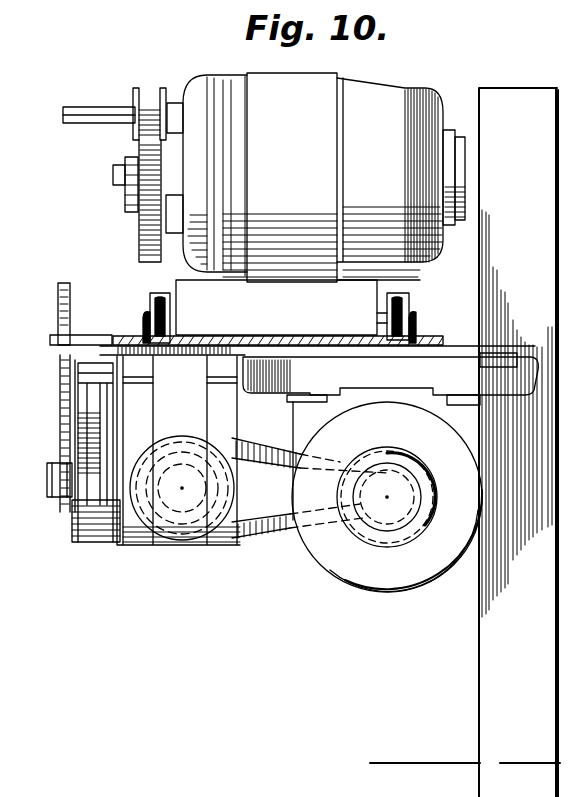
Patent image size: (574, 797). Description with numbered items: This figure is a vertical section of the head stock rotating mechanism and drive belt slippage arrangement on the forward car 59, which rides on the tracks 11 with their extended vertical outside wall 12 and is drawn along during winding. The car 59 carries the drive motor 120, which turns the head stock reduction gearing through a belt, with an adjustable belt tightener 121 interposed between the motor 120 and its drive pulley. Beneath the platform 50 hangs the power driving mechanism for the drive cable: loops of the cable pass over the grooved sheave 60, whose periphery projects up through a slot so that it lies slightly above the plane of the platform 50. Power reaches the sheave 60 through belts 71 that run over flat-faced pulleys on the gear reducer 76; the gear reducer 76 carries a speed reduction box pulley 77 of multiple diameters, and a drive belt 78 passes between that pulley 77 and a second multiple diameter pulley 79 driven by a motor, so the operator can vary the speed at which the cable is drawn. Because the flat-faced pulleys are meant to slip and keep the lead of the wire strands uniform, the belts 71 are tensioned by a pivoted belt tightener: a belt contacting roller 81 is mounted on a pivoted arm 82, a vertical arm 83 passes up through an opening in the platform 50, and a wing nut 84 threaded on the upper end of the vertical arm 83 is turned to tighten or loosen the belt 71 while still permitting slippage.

The drive motor 120 is at (403, 78).
The adjustable belt tightener 121 is at (181, 100).
The forward car 59 is at (281, 307).
The vertical outside wall 12 is at (157, 297).
The tracks 11 is at (147, 323).
The platform 50 is at (423, 350).
The gear reducer 76 is at (178, 450).
The speed reduction box pulley 77 is at (182, 530).
The drive belt 78 is at (263, 537).
The second multiple diameter pulley 79 is at (368, 533).
The grooved sheave 60 is at (382, 580).
The vertical arm 83 is at (66, 286).
The wing nut 84 is at (54, 331).
The pivoted arm 82 is at (75, 432).
The belts 71 is at (93, 444).
The belt contacting roller 81 is at (83, 540).